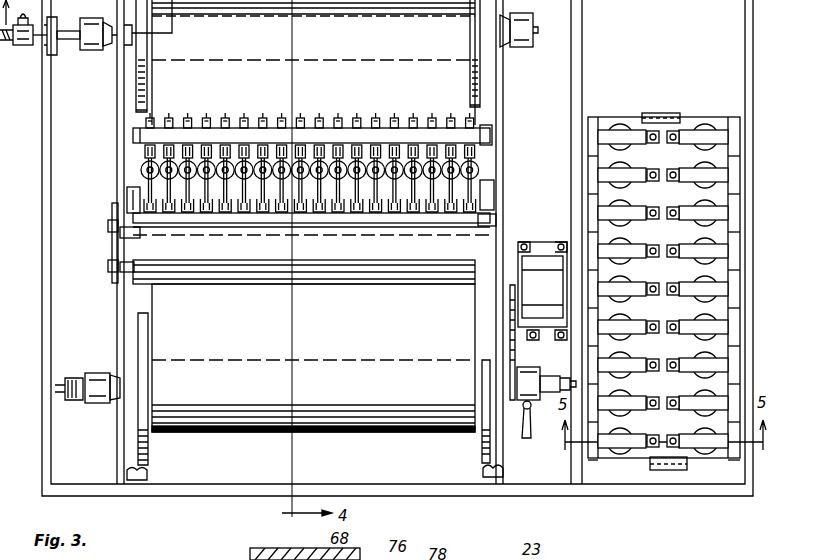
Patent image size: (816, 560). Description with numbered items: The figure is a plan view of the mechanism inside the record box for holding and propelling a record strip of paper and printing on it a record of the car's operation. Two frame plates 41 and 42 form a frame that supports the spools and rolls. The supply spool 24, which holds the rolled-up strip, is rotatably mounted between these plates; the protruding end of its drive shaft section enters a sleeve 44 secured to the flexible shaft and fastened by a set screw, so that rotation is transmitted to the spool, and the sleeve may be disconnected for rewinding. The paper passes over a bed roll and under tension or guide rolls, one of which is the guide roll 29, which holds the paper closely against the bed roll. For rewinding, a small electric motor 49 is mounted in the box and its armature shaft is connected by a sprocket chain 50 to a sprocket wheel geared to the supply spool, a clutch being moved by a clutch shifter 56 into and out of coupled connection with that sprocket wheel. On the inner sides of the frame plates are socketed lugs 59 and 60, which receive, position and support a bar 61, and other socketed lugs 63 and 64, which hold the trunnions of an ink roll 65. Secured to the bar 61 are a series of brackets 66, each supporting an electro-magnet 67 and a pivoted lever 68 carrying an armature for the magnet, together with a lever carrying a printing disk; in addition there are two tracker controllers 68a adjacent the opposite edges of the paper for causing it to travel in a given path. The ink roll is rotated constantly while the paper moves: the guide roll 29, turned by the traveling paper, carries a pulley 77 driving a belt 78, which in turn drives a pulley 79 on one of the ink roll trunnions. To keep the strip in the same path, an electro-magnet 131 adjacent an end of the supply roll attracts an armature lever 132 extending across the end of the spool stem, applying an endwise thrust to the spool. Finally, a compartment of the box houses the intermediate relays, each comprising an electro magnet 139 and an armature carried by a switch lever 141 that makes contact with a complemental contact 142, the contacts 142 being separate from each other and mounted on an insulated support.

The plate 41 is at (118, 80).
The sleeve 44 is at (27, 45).
The socketed lug 59 is at (135, 130).
The socketed lug 60 is at (490, 128).
The bar 61 is at (318, 152).
The tracker controller 68a is at (147, 168).
The bracket 66 is at (185, 140).
The electro-magnet 67 is at (236, 160).
The ink roll 65 is at (258, 220).
The pivoted lever 68 is at (186, 200).
The guide roll 29 is at (262, 272).
The supply spool 24 is at (480, 352).
The socketed lug 63 is at (132, 205).
The socketed lug 64 is at (497, 190).
The pulley 77 is at (110, 280).
The belt 78 is at (112, 254).
The pulley 79 is at (110, 228).
The armature lever 132 is at (78, 378).
The electro-magnet 131 is at (82, 404).
The plate 42 is at (500, 92).
The electric motor 49 is at (538, 275).
The sprocket chain 50 is at (518, 356).
The clutch shifter 56 is at (526, 440).
The electro magnet 139 is at (641, 288).
The switch lever 141 is at (632, 136).
The complemental contact 142 is at (654, 128).